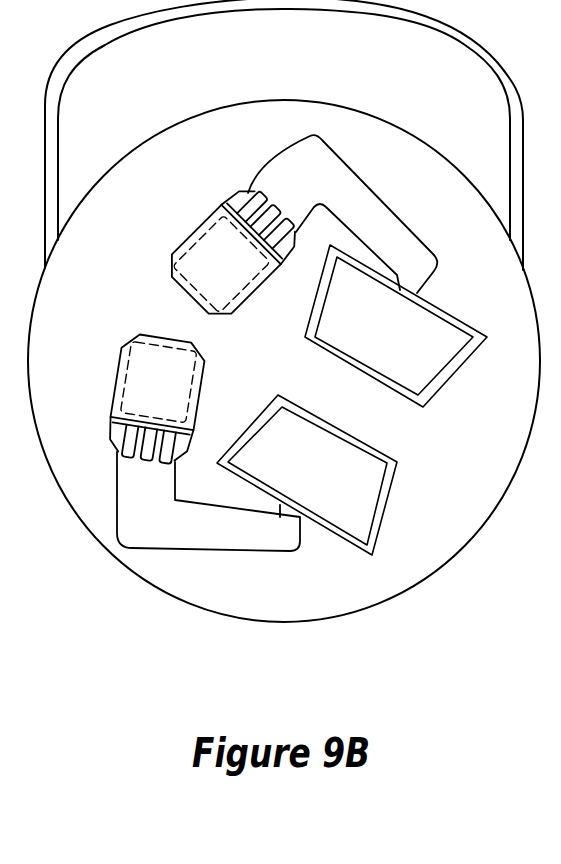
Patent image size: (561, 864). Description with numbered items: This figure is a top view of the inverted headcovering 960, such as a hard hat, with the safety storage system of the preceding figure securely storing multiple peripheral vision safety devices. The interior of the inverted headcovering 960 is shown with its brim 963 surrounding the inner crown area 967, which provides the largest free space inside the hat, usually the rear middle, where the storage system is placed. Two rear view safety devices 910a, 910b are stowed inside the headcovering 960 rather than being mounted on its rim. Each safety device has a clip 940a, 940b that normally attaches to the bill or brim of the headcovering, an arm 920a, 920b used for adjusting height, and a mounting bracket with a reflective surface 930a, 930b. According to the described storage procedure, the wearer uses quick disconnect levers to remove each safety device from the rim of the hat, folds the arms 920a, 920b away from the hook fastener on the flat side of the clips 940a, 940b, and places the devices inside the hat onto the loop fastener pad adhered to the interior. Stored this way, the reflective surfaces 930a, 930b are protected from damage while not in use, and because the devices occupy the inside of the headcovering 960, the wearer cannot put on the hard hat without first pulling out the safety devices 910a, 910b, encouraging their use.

The inverted headcovering 960 is at (407, 592).
The housing shell 963 is at (297, 75).
The mounting platform 967 is at (299, 370).
The first power module assembly 910a is at (196, 449).
The second power module assembly 910b is at (291, 230).
The first heat strap 920a is at (238, 522).
The second heat strap 920b is at (363, 197).
The first heat sink plate 930a is at (345, 488).
The second heat sink plate 930b is at (413, 348).
The first power device package 940a is at (182, 394).
The second power device package 940b is at (242, 279).